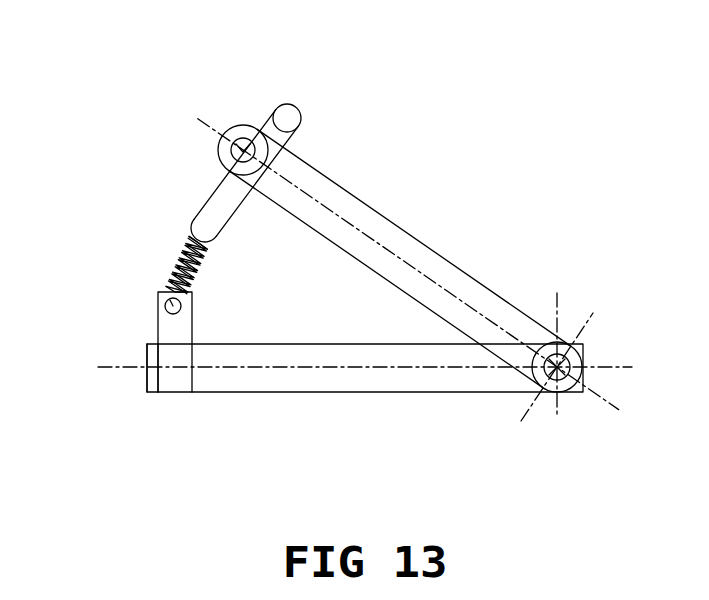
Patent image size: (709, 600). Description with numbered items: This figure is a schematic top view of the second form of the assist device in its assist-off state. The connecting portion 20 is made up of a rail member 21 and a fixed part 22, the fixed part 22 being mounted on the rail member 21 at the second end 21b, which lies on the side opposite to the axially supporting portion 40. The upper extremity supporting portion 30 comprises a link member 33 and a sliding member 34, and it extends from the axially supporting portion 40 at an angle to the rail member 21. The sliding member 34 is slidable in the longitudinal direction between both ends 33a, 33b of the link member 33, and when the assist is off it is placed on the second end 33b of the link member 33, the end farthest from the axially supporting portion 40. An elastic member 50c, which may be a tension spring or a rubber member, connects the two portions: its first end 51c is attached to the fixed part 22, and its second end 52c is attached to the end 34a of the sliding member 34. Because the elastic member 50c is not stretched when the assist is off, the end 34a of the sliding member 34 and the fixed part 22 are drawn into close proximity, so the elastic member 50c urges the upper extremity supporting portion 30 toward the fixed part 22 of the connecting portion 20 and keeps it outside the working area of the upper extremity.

The connecting portion 20 is at (163, 460).
The rail member 21 is at (227, 385).
The second end 21b is at (150, 375).
The fixed part 22 is at (180, 385).
The upper extremity supporting portion 30 is at (327, 56).
The link member 33 is at (310, 177).
The first end of the link member 33a is at (583, 348).
The second end of the link member 33b is at (235, 130).
The sliding member 34 is at (273, 120).
The end of the sliding member 34a is at (200, 217).
The axially supporting portion 40 is at (560, 393).
The elastic member 50c is at (177, 257).
The first end of the elastic member 51c is at (160, 292).
The second end of the elastic member 52c is at (193, 232).